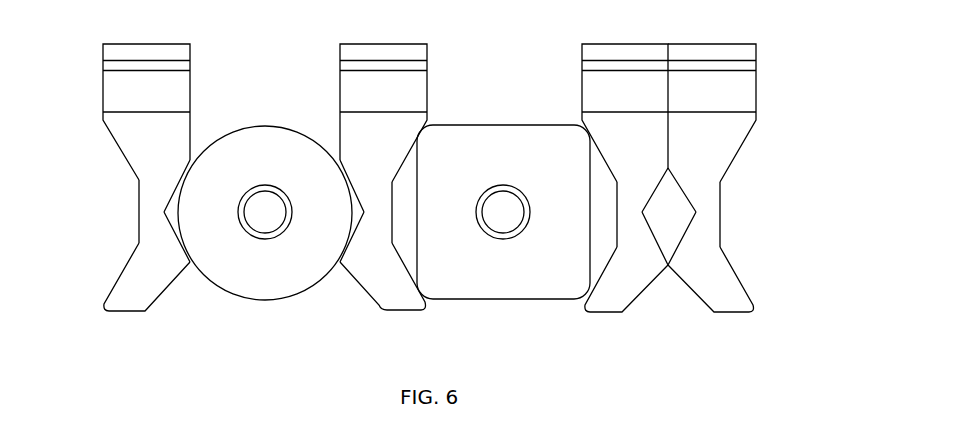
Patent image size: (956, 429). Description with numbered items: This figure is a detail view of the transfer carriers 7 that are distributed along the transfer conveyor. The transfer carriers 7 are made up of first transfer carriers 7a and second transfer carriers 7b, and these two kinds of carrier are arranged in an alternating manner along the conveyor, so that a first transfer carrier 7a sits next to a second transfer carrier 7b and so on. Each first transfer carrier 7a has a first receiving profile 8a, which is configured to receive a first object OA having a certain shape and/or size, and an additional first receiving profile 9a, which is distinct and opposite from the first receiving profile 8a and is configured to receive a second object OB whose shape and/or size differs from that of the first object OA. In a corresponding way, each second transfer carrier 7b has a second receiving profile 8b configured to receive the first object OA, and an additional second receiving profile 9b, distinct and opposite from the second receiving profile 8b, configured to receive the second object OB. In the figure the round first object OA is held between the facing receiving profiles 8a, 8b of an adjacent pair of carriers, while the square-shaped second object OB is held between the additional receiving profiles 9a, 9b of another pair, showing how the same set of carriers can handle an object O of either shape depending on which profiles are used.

The transfer carriers 7 is at (428, 214).
The first transfer carrier 7a is at (377, 306).
The second transfer carrier 7b is at (123, 312).
The first receiving profile 8a is at (355, 197).
The second receiving profile 8b is at (170, 222).
The additional first receiving profile 9a is at (392, 223).
The additional second receiving profile 9b is at (138, 210).
The object O is at (384, 160).
The first object OA is at (263, 125).
The second object OB is at (483, 125).